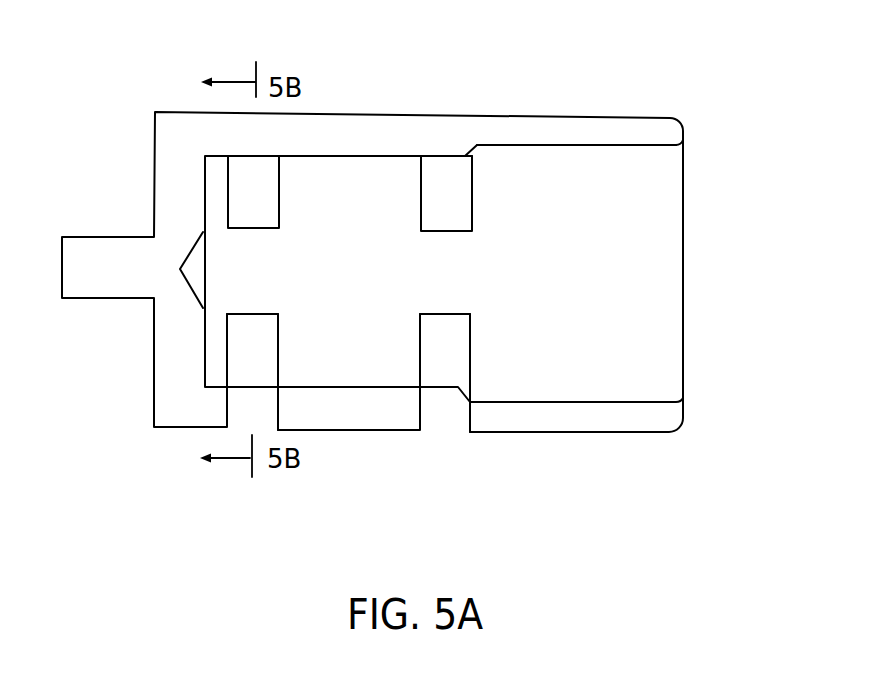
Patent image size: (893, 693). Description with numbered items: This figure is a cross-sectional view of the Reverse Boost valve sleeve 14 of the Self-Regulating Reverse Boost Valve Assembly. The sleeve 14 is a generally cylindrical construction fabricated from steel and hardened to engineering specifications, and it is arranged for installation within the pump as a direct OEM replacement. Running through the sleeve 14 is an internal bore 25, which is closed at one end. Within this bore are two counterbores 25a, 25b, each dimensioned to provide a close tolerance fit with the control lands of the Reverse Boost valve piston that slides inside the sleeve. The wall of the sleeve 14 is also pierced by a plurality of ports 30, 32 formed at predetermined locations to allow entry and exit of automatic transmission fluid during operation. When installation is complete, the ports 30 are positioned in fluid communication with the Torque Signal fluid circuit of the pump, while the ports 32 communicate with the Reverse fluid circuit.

The Reverse Boost valve sleeve 14 is at (393, 93).
The internal bore 25 is at (662, 275).
The counterbore 25a is at (322, 157).
The counterbore 25b is at (570, 146).
The ports 30 is at (235, 188).
The ports 32 is at (460, 223).